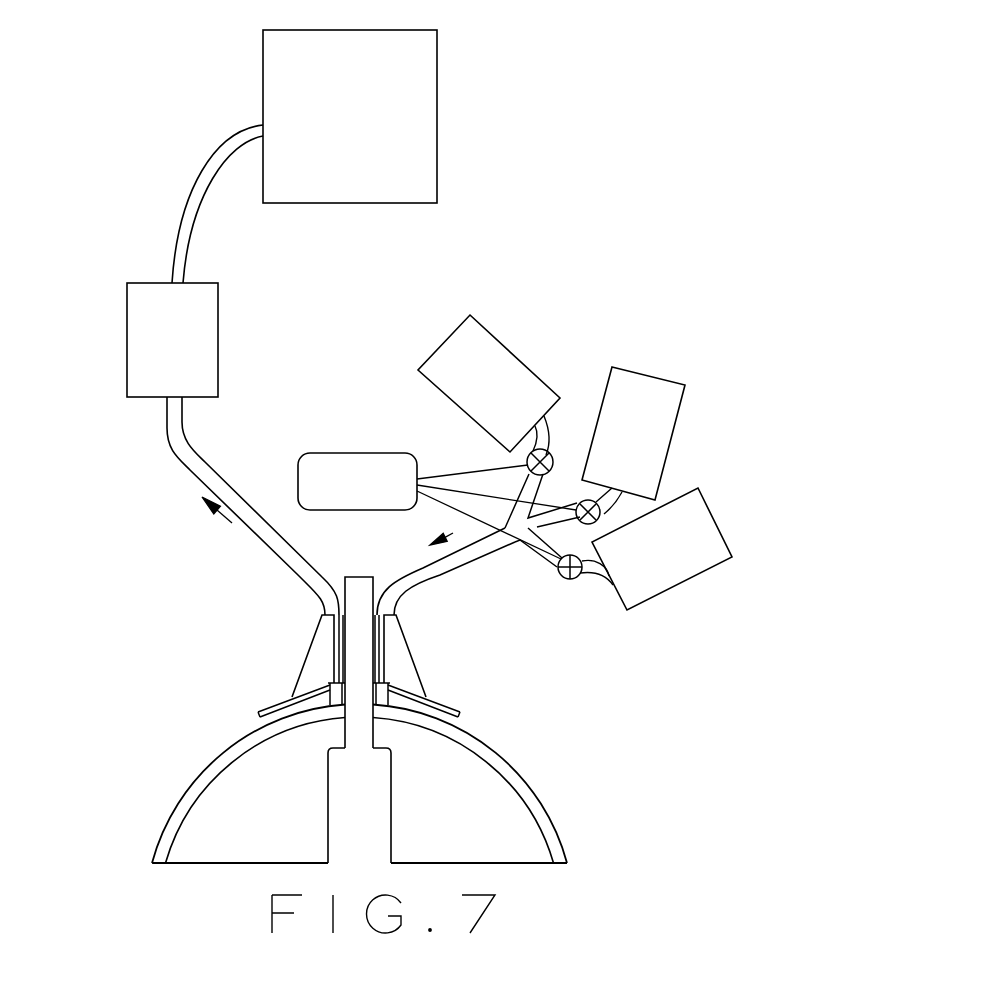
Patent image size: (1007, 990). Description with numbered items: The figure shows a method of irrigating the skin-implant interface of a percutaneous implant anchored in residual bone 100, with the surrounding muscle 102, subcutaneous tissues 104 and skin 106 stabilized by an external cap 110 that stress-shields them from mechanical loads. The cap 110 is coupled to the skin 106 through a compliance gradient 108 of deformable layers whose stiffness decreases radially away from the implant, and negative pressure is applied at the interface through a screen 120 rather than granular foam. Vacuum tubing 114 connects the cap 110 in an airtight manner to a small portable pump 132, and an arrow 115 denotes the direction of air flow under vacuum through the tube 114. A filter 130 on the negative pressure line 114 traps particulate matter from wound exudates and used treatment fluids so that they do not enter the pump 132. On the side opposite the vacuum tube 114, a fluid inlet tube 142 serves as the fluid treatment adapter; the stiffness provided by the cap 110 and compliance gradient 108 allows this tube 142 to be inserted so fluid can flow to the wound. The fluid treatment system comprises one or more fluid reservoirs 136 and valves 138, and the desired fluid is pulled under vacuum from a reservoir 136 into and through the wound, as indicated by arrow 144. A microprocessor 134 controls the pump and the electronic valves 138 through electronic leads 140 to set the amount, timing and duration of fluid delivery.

The residual bone 100 is at (370, 838).
The muscle 102 is at (497, 835).
The subcutaneous tissues 104 is at (517, 758).
The skin 106 is at (490, 732).
The compliance gradient 108 is at (450, 697).
The external cap 110 is at (305, 660).
The vacuum tubing 114 is at (168, 438).
The arrow 115 is at (215, 515).
The screen 120 is at (397, 687).
The filter 130 is at (127, 363).
The pump 132 is at (437, 110).
The microprocessor 134 is at (365, 453).
The fluid reservoir 136 is at (513, 348).
The valve 138 is at (563, 579).
The electronic leads 140 is at (430, 503).
The fluid inlet tube 142 is at (449, 565).
The arrow 144 is at (462, 530).